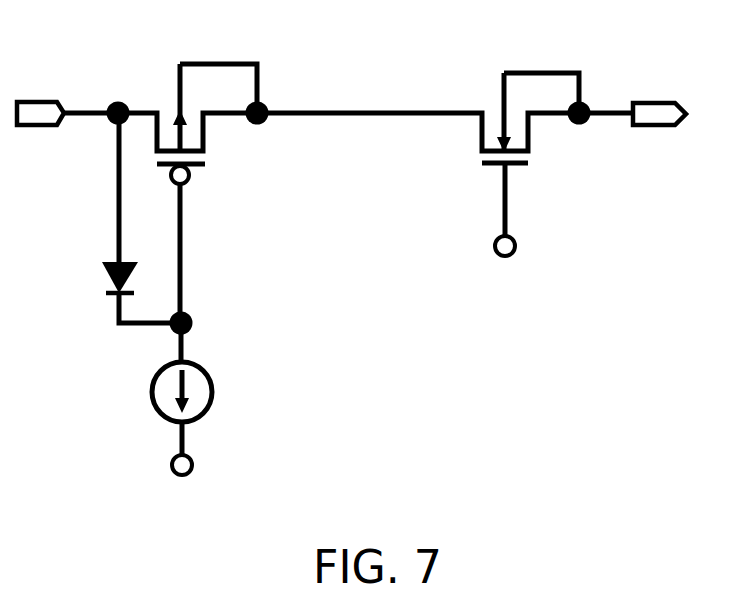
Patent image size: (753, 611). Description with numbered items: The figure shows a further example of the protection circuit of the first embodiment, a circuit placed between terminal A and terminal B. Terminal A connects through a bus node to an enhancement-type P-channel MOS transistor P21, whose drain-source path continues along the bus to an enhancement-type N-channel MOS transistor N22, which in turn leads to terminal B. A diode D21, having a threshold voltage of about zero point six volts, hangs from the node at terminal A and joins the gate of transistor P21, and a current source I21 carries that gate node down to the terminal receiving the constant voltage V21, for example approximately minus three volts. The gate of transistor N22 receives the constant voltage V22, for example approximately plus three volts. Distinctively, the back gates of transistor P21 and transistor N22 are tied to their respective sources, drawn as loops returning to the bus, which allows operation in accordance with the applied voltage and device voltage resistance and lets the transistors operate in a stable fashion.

The terminal A is at (33, 101).
The terminal B is at (657, 100).
The transistor P21 is at (215, 175).
The transistor N22 is at (477, 173).
The constant voltage V22 is at (518, 235).
The diode D21 is at (105, 280).
The current source I21 is at (152, 398).
The constant voltage V21 is at (172, 463).